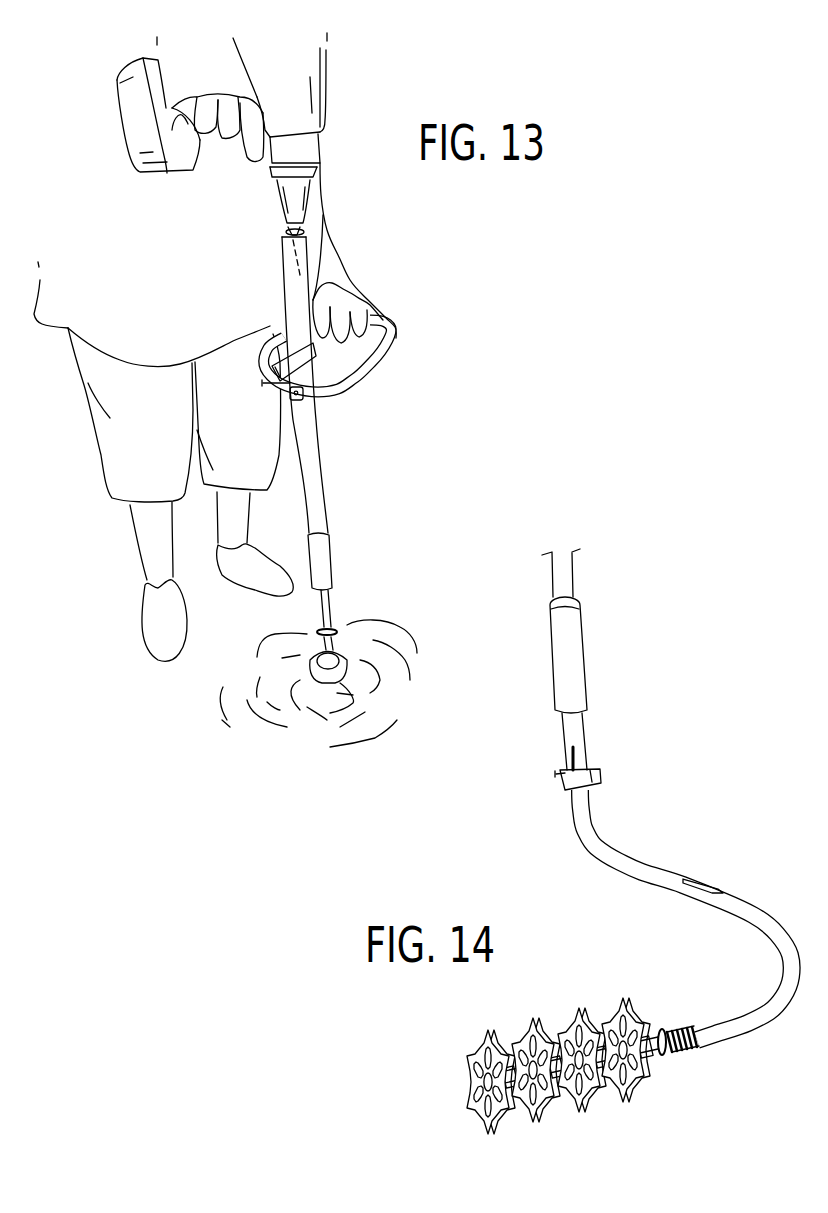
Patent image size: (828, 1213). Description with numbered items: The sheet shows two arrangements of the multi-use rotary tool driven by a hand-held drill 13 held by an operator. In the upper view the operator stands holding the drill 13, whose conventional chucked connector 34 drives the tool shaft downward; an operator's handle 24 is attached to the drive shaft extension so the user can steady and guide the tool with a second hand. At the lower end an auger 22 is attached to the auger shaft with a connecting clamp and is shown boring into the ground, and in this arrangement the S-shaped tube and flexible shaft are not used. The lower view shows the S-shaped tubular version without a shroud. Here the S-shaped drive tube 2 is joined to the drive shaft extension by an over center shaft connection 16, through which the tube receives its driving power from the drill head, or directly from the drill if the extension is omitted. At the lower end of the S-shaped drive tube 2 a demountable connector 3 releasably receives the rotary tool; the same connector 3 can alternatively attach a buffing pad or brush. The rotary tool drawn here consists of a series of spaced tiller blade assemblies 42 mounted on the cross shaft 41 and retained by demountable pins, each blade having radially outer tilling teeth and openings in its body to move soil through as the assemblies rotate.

In FIG. 13, the power drill 13 is at (300, 80).
In FIG. 13, the chucked connector 34 is at (298, 191).
In FIG. 13, the operator's handle 24 is at (375, 372).
In FIG. 13, the S-shaped drive tube 2 is at (343, 655).
In FIG. 14, the S-shaped drive tube 2 is at (632, 862).
In FIG. 13, the demountable connector 3 is at (290, 645).
In FIG. 14, the demountable connector 3 is at (677, 1030).
In FIG. 13, the auger 22 is at (340, 657).
In FIG. 14, the over center shaft connection 16 is at (603, 782).
In FIG. 14, the cross shaft 41 is at (547, 1053).
In FIG. 14, the tiller blade assemblies 42 is at (565, 1120).